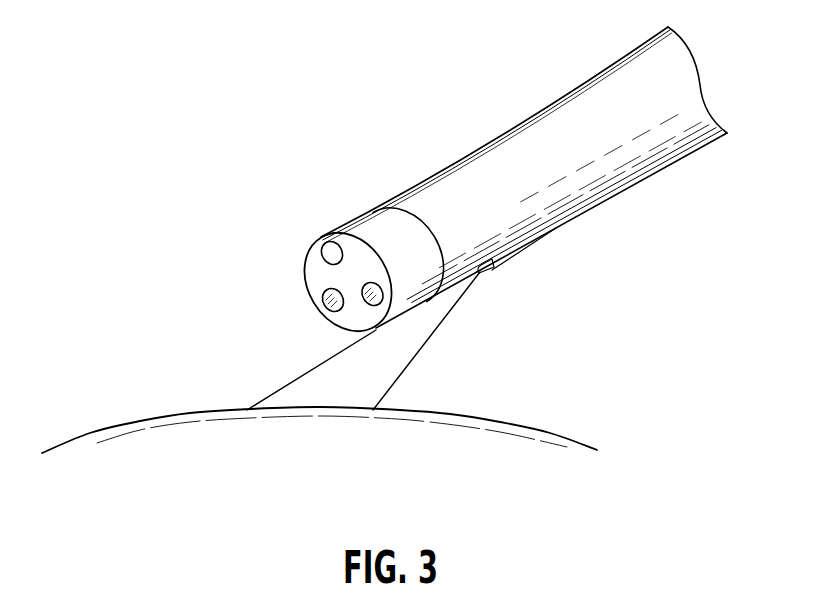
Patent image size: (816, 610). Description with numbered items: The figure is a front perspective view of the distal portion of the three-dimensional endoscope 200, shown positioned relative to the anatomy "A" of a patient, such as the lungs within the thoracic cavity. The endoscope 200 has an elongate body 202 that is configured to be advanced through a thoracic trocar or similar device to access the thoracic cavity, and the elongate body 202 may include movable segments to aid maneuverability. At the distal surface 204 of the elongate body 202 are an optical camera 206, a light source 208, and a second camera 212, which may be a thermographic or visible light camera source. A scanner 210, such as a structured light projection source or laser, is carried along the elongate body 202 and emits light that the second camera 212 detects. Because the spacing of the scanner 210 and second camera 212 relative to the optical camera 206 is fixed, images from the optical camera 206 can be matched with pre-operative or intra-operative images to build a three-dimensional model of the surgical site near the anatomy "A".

The 3D endoscope 200 is at (130, 145).
The elongate body 202 is at (508, 142).
The distal surface 204 is at (308, 261).
The optical camera 206 is at (322, 299).
The light source 208 is at (330, 240).
The scanner 210 is at (507, 264).
The second camera 212 is at (385, 302).
The anatomy A is at (103, 427).